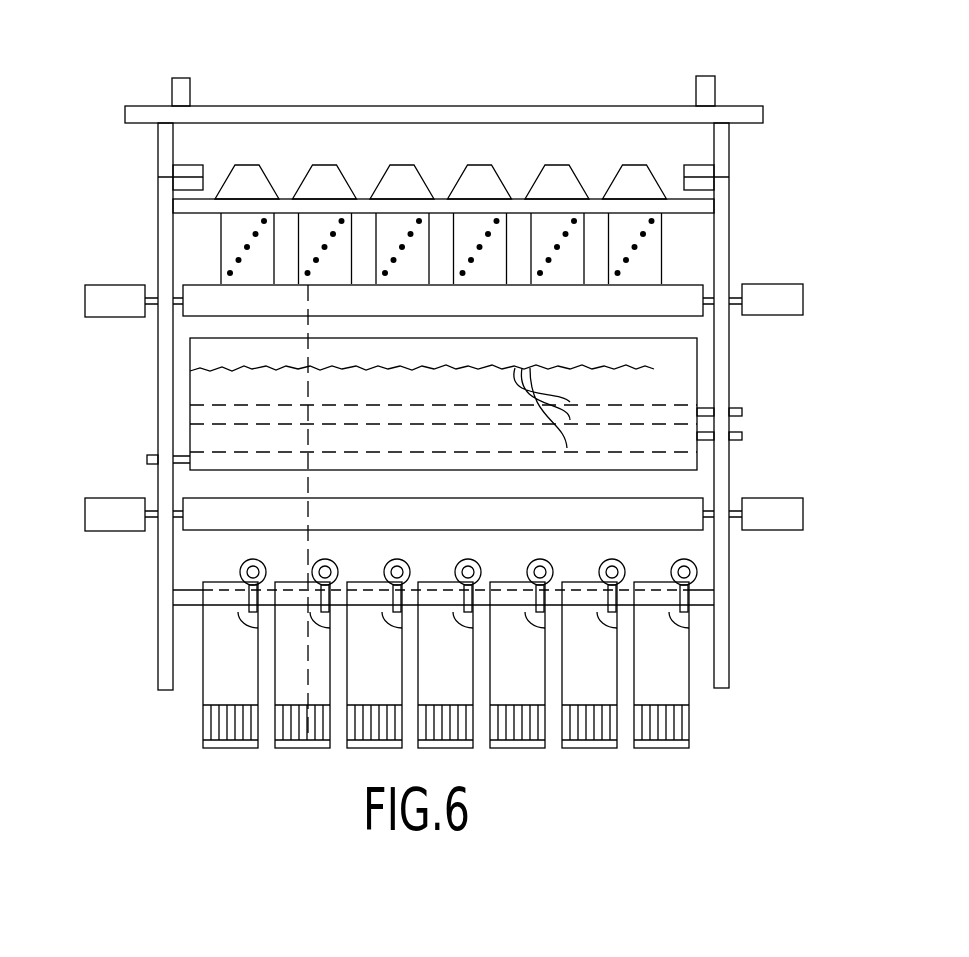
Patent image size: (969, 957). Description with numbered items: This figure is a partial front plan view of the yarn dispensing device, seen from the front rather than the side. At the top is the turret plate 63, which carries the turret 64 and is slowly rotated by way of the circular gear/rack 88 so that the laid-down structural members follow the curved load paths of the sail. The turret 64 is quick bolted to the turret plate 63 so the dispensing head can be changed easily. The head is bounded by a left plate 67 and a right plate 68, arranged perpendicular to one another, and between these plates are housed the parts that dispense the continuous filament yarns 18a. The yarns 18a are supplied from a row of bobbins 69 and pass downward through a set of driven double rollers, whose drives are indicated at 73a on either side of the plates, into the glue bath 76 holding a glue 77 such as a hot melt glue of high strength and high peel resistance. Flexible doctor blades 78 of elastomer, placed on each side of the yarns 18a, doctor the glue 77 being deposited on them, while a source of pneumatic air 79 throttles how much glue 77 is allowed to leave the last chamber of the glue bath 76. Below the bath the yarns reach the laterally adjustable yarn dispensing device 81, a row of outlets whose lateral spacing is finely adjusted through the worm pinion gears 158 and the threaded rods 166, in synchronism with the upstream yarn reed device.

The turret plate 63 is at (420, 105).
The circular gear/rack 88 is at (181, 78).
The left plate 67 is at (158, 218).
The right plate 68 is at (729, 242).
The turret 64 is at (729, 158).
The bobbins 69 is at (322, 165).
The drive motors 73a is at (803, 302).
The glue bath 76 is at (697, 355).
The glue 77 is at (253, 401).
The continuous filament yarns 18a is at (308, 352).
The flexible doctor blades 78 is at (541, 393).
The source of pneumatic air 79 is at (147, 459).
The threaded rods 166 is at (706, 598).
The worm pinion gears 158 is at (697, 568).
The laterally adjustable yarn dispensing device 81 is at (191, 722).